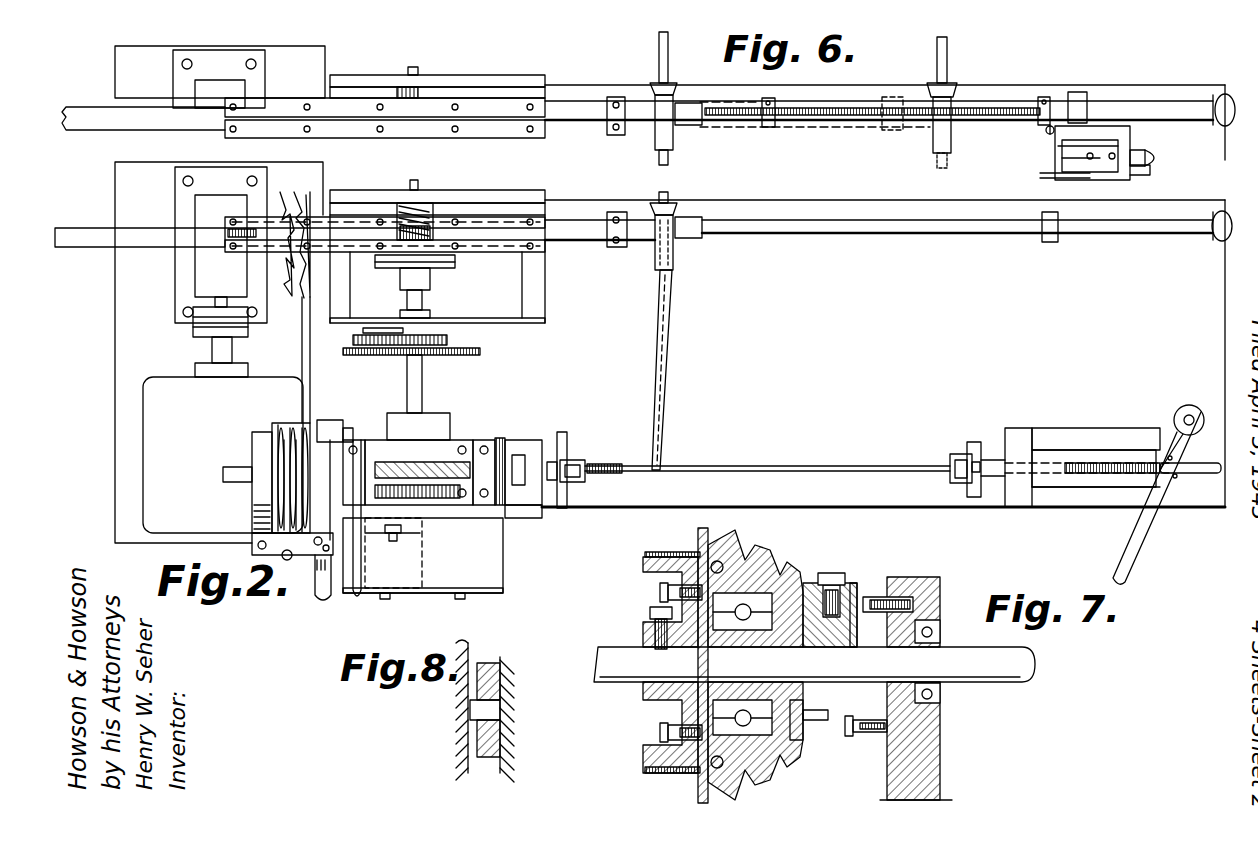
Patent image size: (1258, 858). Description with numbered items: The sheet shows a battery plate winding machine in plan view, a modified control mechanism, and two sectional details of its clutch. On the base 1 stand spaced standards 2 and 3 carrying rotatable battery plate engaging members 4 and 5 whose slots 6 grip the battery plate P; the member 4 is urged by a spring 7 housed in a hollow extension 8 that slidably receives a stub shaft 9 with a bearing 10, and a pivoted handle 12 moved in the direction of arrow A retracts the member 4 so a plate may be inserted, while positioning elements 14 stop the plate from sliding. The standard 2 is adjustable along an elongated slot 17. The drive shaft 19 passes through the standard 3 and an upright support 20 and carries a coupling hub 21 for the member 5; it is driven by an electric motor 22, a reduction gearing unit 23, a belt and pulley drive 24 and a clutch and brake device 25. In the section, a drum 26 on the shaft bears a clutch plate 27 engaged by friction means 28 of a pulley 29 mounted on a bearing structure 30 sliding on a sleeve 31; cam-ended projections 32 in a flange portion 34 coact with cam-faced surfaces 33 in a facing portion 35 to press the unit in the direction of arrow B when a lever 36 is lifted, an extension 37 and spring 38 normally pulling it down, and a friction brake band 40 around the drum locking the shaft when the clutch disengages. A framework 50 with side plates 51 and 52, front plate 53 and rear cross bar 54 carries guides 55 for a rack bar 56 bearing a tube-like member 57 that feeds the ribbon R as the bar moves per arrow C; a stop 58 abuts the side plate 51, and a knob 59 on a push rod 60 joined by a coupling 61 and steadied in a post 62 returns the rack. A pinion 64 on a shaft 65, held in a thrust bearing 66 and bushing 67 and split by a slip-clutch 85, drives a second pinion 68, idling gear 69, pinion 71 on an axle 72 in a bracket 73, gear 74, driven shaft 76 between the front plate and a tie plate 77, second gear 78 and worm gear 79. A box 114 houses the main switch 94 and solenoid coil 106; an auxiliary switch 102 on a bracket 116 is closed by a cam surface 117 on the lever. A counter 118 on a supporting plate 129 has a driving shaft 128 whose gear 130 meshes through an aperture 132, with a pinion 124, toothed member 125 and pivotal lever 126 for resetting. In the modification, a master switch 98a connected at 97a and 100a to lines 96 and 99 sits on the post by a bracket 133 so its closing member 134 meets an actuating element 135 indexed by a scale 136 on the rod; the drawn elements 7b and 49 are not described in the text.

In FIG. 6, the base 1 is at (842, 151).
In FIG. 2, the base 1 is at (902, 340).
In FIG. 2, the standard 2 is at (1015, 428).
In FIG. 2, the standard 3 is at (526, 436).
In FIG. 2, the battery plate engaging member 4 is at (972, 442).
In FIG. 2, the battery plate engaging member 5 is at (567, 450).
In FIG. 2, the slot 6 is at (583, 462).
In FIG. 2, the spring 7 is at (207, 458).
In FIG. 2, the spring rod 7b is at (1072, 480).
In FIG. 2, the hollow extension 8 is at (1040, 500).
In FIG. 7, the hollow extension 8 is at (840, 730).
In FIG. 2, the stub shaft 9 is at (985, 488).
In FIG. 2, the bearing 10 is at (968, 497).
In FIG. 2, the pivoted handle 12 is at (1145, 547).
In FIG. 2, the adjustable positioning elements 14 is at (568, 488).
In FIG. 2, the elongated slot 17 is at (1195, 462).
In FIG. 7, the drive shaft 19 is at (608, 670).
In FIG. 7, the upright support 20 is at (940, 587).
In FIG. 2, the coupling hub 21 is at (600, 510).
In FIG. 2, the electric motor 22 is at (143, 450).
In FIG. 6, the reduction gearing unit 23 is at (228, 82).
In FIG. 2, the reduction gearing unit 23 is at (205, 268).
In FIG. 2, the belt and pulley drive 24 is at (295, 300).
In FIG. 2, the combination power transmitting clutch and friction brake device 25 is at (246, 472).
In FIG. 7, the combination power transmitting clutch and friction brake device 25 is at (640, 700).
In FIG. 7, the drum 26 is at (650, 585).
In FIG. 2, the clutch plate 27 is at (283, 436).
In FIG. 7, the clutch plate 27 is at (700, 539).
In FIG. 7, the friction means 28 is at (710, 555).
In FIG. 2, the pulley 29 is at (292, 430).
In FIG. 7, the pulley 29 is at (760, 582).
In FIG. 7, the bearing structure 30 is at (805, 591).
In FIG. 7, the sleeve 31 is at (852, 600).
In FIG. 7, the cam-ended projections 32 is at (870, 740).
In FIG. 8, the cam-ended projections 32 is at (462, 735).
In FIG. 7, the cam-faced surfaces 33 is at (832, 740).
In FIG. 8, the cam-faced surfaces 33 is at (470, 705).
In FIG. 7, the flange portion 34 is at (880, 597).
In FIG. 8, the flange portion 34 is at (503, 669).
In FIG. 7, the facing portion 35 is at (858, 732).
In FIG. 8, the facing portion 35 is at (462, 643).
In FIG. 2, the lever 36 is at (318, 598).
In FIG. 7, the lever 36 is at (844, 577).
In FIG. 2, the extension 37 is at (304, 578).
In FIG. 2, the spring 38 is at (268, 592).
In FIG. 2, the friction brake band 40 is at (262, 440).
In FIG. 7, the friction brake band 40 is at (648, 770).
In FIG. 2, the screw 49 is at (352, 560).
In FIG. 2, the upstanding framework 50 is at (356, 190).
In FIG. 2, the side plate 51 is at (540, 292).
In FIG. 2, the side plate 52 is at (342, 265).
In FIG. 2, the front plate 53 is at (535, 323).
In FIG. 2, the rear cross bar 54 is at (470, 200).
In FIG. 6, the guides 55 is at (482, 98).
In FIG. 2, the guides 55 is at (510, 220).
In FIG. 6, the rack bar 56 is at (83, 112).
In FIG. 2, the rack bar 56 is at (77, 232).
In FIG. 6, the tube-like member 57 is at (665, 85).
In FIG. 2, the tube-like member 57 is at (662, 270).
In FIG. 6, the stop 58 is at (616, 116).
In FIG. 2, the stop 58 is at (614, 212).
In FIG. 6, the knob 59 is at (1222, 95).
In FIG. 2, the knob 59 is at (1218, 240).
In FIG. 6, the push rod 60 is at (872, 108).
In FIG. 2, the push rod 60 is at (875, 233).
In FIG. 6, the coupling 61 is at (690, 120).
In FIG. 2, the coupling 61 is at (688, 238).
In FIG. 6, the post 62 is at (1078, 92).
In FIG. 2, the post 62 is at (1052, 242).
In FIG. 2, the pinion 64 is at (414, 180).
In FIG. 6, the shaft 65 is at (416, 68).
In FIG. 2, the shaft 65 is at (425, 195).
In FIG. 2, the adjustable thrust bearing 66 is at (430, 205).
In FIG. 2, the bushing 67 is at (405, 318).
In FIG. 2, the second pinion 68 is at (430, 356).
In FIG. 2, the idling gear 69 is at (450, 340).
In FIG. 2, the pinion 71 is at (343, 352).
In FIG. 2, the axle 72 is at (340, 355).
In FIG. 2, the bracket 73 is at (363, 333).
In FIG. 2, the gear 74 is at (390, 356).
In FIG. 2, the driven shaft 76 is at (434, 420).
In FIG. 2, the tie plate 77 is at (535, 520).
In FIG. 2, the second gear 78 is at (482, 458).
In FIG. 2, the worm gear 79 is at (455, 440).
In FIG. 2, the slip-clutch 85 is at (435, 270).
In FIG. 2, the main switch 94 is at (480, 595).
In FIG. 6, the line 96 is at (1060, 158).
In FIG. 6, the connection 97a is at (1087, 155).
In FIG. 6, the master switch 98a is at (1130, 152).
In FIG. 6, the line 99 is at (1050, 176).
In FIG. 6, the connection 100a is at (1148, 164).
In FIG. 2, the auxiliary switch 102 is at (330, 420).
In FIG. 2, the solenoid coil 106 is at (420, 560).
In FIG. 2, the box 114 is at (455, 595).
In FIG. 2, the bracket 116 is at (348, 428).
In FIG. 2, the cam surface 117 is at (432, 462).
In FIG. 2, the counter 118 is at (425, 498).
In FIG. 2, the pinion 124 is at (428, 416).
In FIG. 2, the toothed member 125 is at (280, 530).
In FIG. 2, the pivotal lever 126 is at (353, 590).
In FIG. 2, the counter driving shaft 128 is at (430, 500).
In FIG. 2, the supporting plate 129 is at (520, 520).
In FIG. 2, the gear 130 is at (510, 445).
In FIG. 2, the aperture 132 is at (545, 514).
In FIG. 6, the bracket 133 is at (1115, 130).
In FIG. 6, the depressible switch closing member 134 is at (1048, 134).
In FIG. 6, the actuating element 135 is at (772, 100).
In FIG. 6, the scale 136 is at (868, 108).
In FIG. 6, the ribbon R is at (658, 48).
In FIG. 2, the ribbon R is at (662, 330).
In FIG. 2, the battery plate P is at (722, 467).
In FIG. 2, the arrow C is at (761, 247).
In FIG. 2, the arrow A is at (1161, 573).
In FIG. 7, the arrow B is at (764, 790).